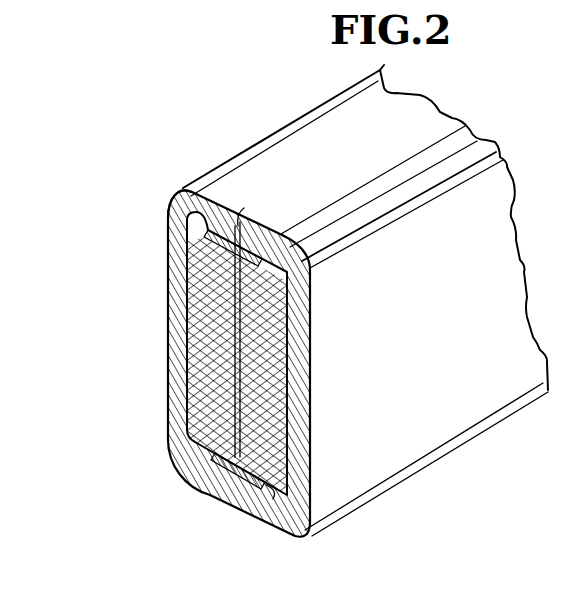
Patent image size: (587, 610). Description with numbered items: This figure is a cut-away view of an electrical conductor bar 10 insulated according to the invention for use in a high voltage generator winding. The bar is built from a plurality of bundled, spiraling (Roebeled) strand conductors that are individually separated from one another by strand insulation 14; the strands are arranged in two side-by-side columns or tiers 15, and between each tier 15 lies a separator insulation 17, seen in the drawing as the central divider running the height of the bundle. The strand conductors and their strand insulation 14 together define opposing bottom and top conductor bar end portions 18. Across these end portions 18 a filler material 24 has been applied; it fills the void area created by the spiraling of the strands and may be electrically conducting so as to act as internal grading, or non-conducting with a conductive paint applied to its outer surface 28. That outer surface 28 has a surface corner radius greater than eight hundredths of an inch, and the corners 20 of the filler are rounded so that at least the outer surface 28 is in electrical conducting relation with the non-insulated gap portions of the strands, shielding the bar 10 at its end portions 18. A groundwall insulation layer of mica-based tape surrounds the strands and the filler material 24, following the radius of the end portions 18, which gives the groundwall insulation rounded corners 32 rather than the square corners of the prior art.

The electrical conductor bar 10 is at (138, 346).
The strand insulation 14 is at (300, 350).
The tiers 15 is at (242, 214).
The separator insulation 17 is at (285, 376).
The conductor bar end portions 18 is at (172, 192).
The corners of the filler 20 is at (168, 266).
The filler material 24 is at (206, 226).
The outer surface 28 is at (181, 191).
The rounded corners 32 is at (168, 200).